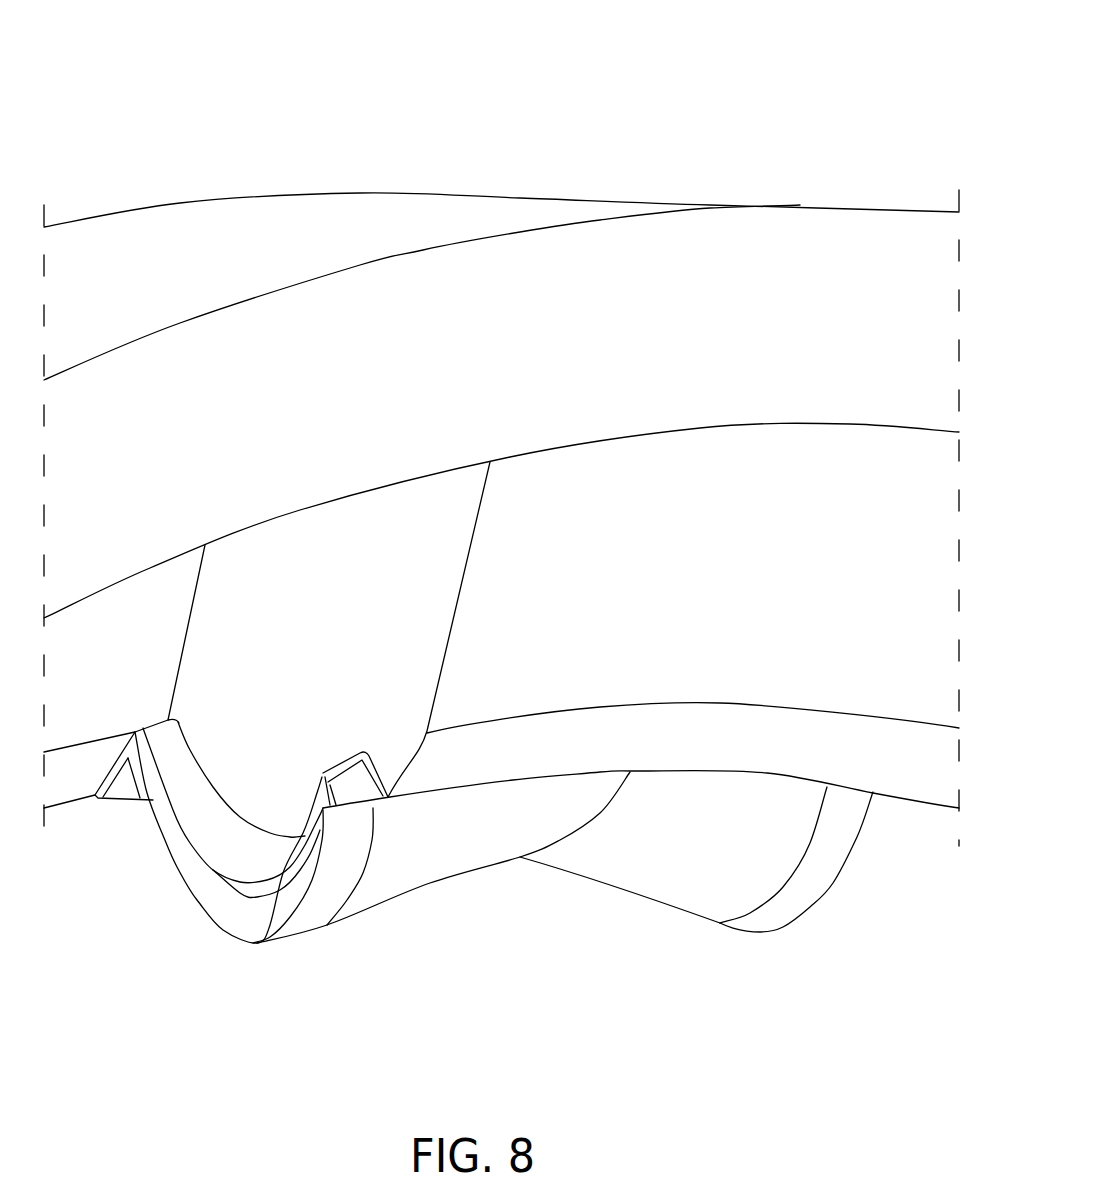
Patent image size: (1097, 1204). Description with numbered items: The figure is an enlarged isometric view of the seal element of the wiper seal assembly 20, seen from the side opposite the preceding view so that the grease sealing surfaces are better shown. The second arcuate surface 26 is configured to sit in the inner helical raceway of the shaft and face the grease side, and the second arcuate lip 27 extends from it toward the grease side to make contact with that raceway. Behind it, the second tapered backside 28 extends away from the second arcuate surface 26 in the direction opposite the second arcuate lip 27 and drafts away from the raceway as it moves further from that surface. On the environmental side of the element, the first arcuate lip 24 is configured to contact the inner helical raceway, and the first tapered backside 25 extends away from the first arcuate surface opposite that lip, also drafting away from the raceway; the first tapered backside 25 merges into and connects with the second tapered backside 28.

The wiper seal assembly 20 is at (748, 105).
The first arcuate lip 24 is at (810, 907).
The first tapered backside 25 is at (613, 887).
The second arcuate surface 26 is at (363, 652).
The second arcuate lip 27 is at (187, 873).
The second tapered backside 28 is at (377, 910).